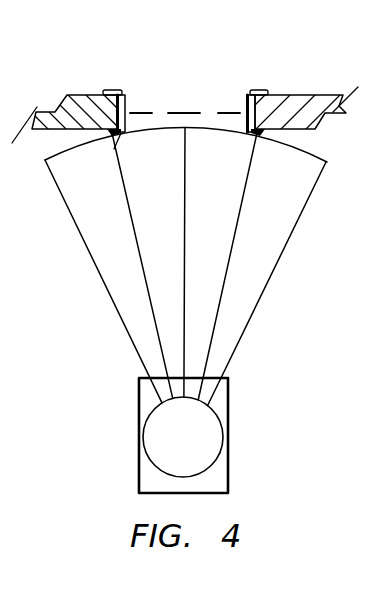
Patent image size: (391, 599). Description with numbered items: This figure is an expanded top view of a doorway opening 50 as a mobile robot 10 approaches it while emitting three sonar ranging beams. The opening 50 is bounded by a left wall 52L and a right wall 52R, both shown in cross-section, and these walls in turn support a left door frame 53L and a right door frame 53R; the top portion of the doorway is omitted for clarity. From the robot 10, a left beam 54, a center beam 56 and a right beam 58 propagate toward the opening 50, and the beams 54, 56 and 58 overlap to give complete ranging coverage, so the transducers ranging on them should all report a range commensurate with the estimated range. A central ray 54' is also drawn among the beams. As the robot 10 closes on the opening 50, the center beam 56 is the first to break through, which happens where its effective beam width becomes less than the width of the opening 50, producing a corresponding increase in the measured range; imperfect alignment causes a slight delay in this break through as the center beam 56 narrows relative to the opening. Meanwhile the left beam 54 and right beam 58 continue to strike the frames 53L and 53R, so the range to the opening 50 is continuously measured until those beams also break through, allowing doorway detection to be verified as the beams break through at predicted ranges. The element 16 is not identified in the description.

The mobile robot 10 is at (229, 470).
The light source 16 is at (225, 435).
The doorway opening 50 is at (188, 113).
The left wall 52L is at (78, 95).
The right wall 52R is at (313, 96).
The left door frame 53L is at (123, 91).
The right door frame 53R is at (257, 92).
The left beam 54 is at (94, 281).
The central light ray 54' is at (157, 262).
The center beam 56 is at (134, 227).
The right beam 58 is at (187, 152).